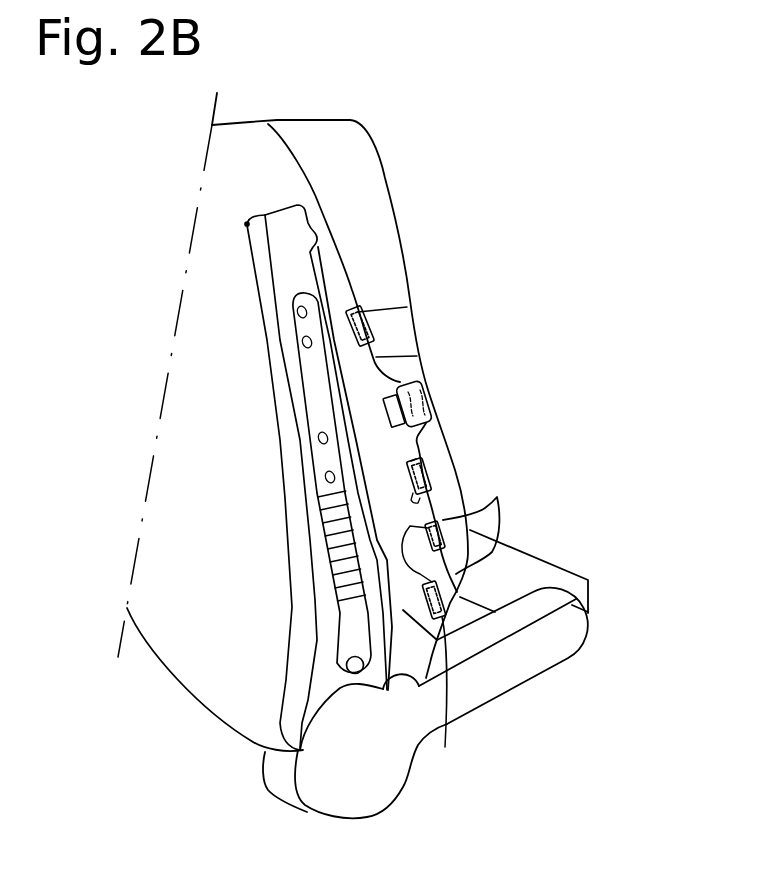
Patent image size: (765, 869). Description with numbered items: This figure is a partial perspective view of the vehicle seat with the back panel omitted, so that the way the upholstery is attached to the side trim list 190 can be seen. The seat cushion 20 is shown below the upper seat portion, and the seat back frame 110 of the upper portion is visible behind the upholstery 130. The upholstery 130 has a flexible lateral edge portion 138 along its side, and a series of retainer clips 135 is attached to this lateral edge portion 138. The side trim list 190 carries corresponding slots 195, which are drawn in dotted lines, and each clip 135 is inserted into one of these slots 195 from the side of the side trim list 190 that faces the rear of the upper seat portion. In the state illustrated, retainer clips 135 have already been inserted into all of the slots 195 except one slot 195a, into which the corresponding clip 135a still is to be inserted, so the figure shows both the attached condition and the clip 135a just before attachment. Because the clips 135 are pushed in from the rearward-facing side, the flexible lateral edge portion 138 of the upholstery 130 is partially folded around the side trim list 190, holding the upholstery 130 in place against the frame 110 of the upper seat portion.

The upholstery 130 is at (453, 247).
The seat back frame 110 is at (285, 498).
The clips 135 is at (372, 338).
The clip 135a is at (424, 397).
The flexible lateral edge portion 138 is at (417, 460).
The slots 195 is at (366, 309).
The slot 195a is at (400, 386).
The seat cushion 20 is at (537, 560).
The side trim list 190 is at (445, 747).